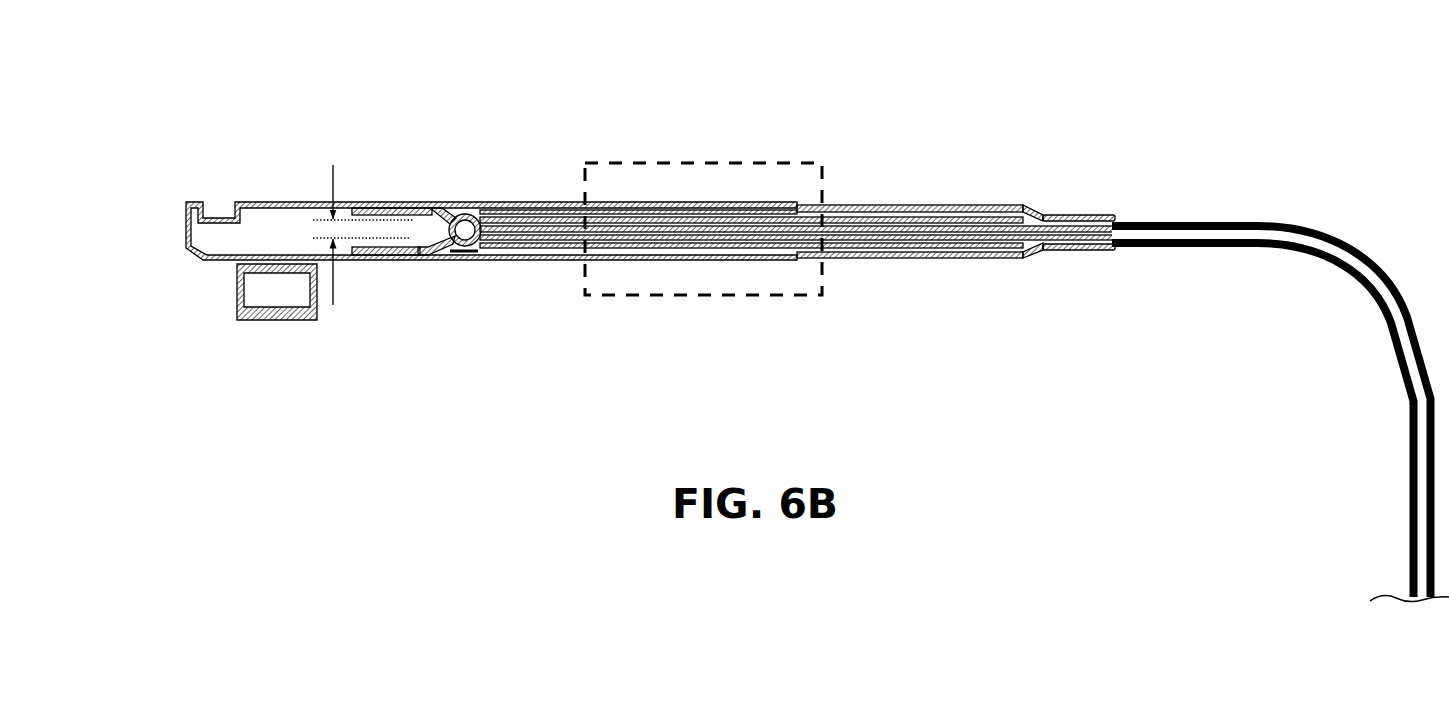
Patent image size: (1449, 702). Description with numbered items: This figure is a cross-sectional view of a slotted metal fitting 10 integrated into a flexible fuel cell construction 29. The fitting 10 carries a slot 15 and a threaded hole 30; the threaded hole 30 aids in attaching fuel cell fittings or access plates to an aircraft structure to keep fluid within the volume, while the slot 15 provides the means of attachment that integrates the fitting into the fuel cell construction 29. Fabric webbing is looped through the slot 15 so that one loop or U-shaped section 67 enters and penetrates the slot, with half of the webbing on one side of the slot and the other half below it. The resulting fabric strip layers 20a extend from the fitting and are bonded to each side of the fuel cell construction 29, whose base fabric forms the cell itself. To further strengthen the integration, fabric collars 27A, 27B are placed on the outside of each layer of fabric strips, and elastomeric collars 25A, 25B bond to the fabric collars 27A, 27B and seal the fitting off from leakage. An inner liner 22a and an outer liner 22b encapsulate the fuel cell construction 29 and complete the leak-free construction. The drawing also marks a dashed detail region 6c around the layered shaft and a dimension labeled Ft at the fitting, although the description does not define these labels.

The slotted metal fitting 10 is at (177, 253).
The slot 15 is at (440, 215).
The fabric strip layer 20a is at (520, 222).
The inner liner 22a is at (1198, 243).
The outer liner 22b is at (1166, 222).
The elastomeric collar 25A is at (388, 201).
The elastomeric collar 25B is at (411, 261).
The fabric collar 27A is at (1023, 207).
The fabric collar 27B is at (1023, 251).
The fuel cell construction 29 is at (905, 236).
The threaded hole 30 is at (270, 288).
The U-shaped section 67 is at (467, 212).
The detail region 6c is at (687, 161).
The travel distance dimension Ft is at (323, 230).